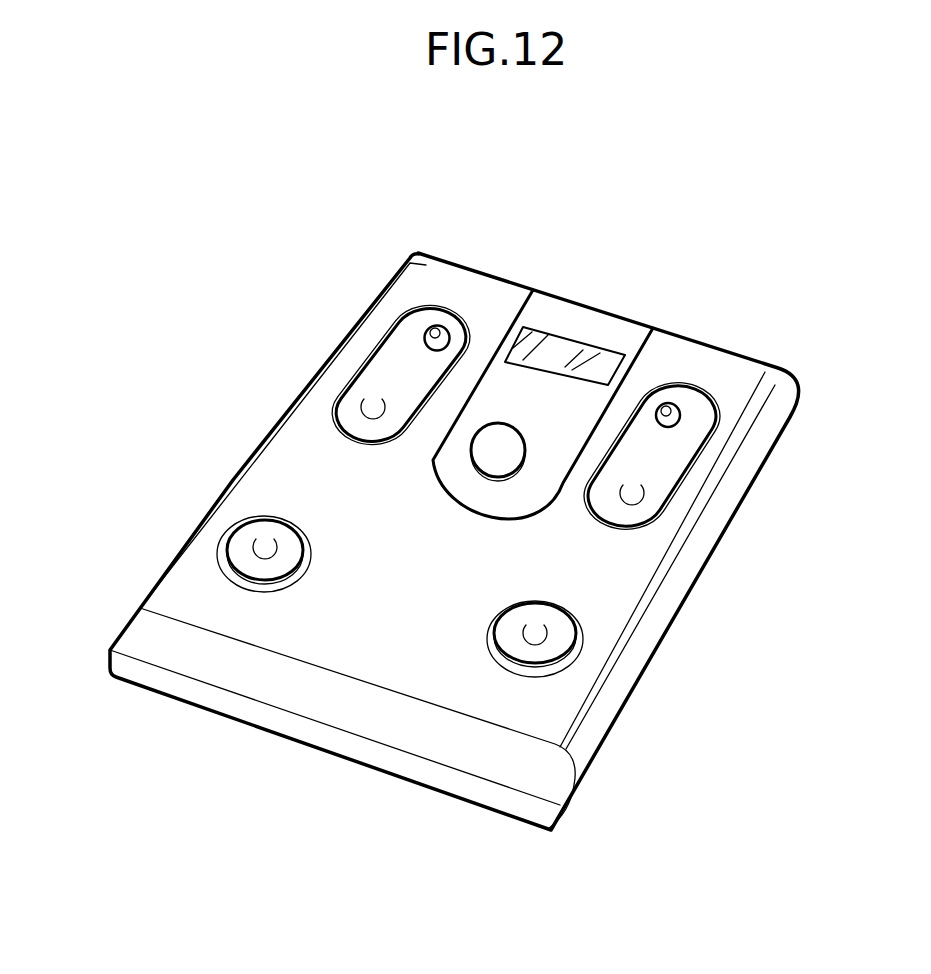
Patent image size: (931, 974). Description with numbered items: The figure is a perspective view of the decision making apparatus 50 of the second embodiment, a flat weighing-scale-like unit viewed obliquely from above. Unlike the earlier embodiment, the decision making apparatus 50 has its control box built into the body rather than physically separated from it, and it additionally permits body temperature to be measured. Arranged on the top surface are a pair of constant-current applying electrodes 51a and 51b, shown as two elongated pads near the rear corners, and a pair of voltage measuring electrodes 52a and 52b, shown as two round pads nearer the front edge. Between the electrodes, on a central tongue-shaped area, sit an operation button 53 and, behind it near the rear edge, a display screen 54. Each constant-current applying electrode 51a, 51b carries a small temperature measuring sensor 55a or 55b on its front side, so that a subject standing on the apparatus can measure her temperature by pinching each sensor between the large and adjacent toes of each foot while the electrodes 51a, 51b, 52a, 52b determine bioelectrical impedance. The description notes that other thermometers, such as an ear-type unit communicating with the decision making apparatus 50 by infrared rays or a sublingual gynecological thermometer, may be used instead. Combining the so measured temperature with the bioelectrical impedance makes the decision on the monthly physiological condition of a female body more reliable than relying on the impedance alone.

The decision making apparatus 50 is at (594, 784).
The constant-current applying electrode 51a is at (383, 378).
The constant-current applying electrode 51b is at (653, 485).
The voltage measuring electrode 52a is at (267, 568).
The voltage measuring electrode 52b is at (558, 637).
The operation button 53 is at (498, 450).
The display screen 54 is at (580, 357).
The temperature measuring sensor 55a is at (447, 331).
The temperature measuring sensor 55b is at (674, 410).